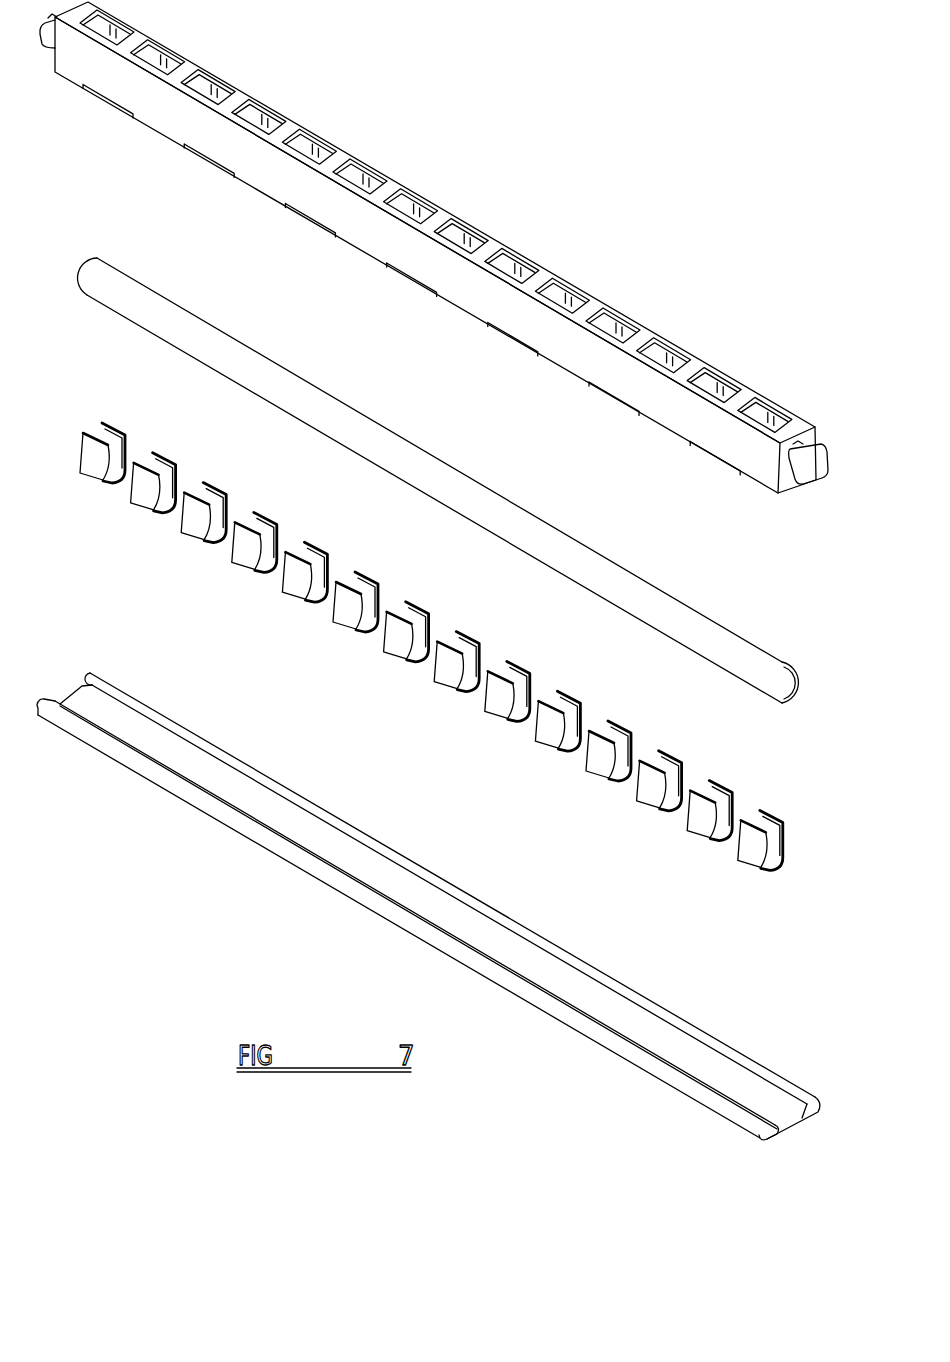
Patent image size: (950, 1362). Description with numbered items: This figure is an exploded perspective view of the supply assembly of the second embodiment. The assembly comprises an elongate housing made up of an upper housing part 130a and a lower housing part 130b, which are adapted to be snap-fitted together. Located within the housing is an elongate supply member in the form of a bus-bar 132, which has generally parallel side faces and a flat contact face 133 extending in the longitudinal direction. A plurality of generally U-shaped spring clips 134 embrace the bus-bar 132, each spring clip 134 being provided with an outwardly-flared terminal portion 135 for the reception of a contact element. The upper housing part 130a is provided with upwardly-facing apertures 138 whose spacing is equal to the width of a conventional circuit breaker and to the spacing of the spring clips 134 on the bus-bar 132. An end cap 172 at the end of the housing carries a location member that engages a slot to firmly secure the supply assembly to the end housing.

The upper housing part 130a is at (443, 247).
The lower housing part 130b is at (797, 1131).
The bus-bar 132 is at (667, 593).
The flat contact face 133 is at (769, 699).
The spring clip 134 is at (382, 649).
The outwardly-flared terminal portion 135 is at (357, 574).
The upwardly-facing aperture 138 is at (628, 330).
The end cap 172 is at (826, 478).